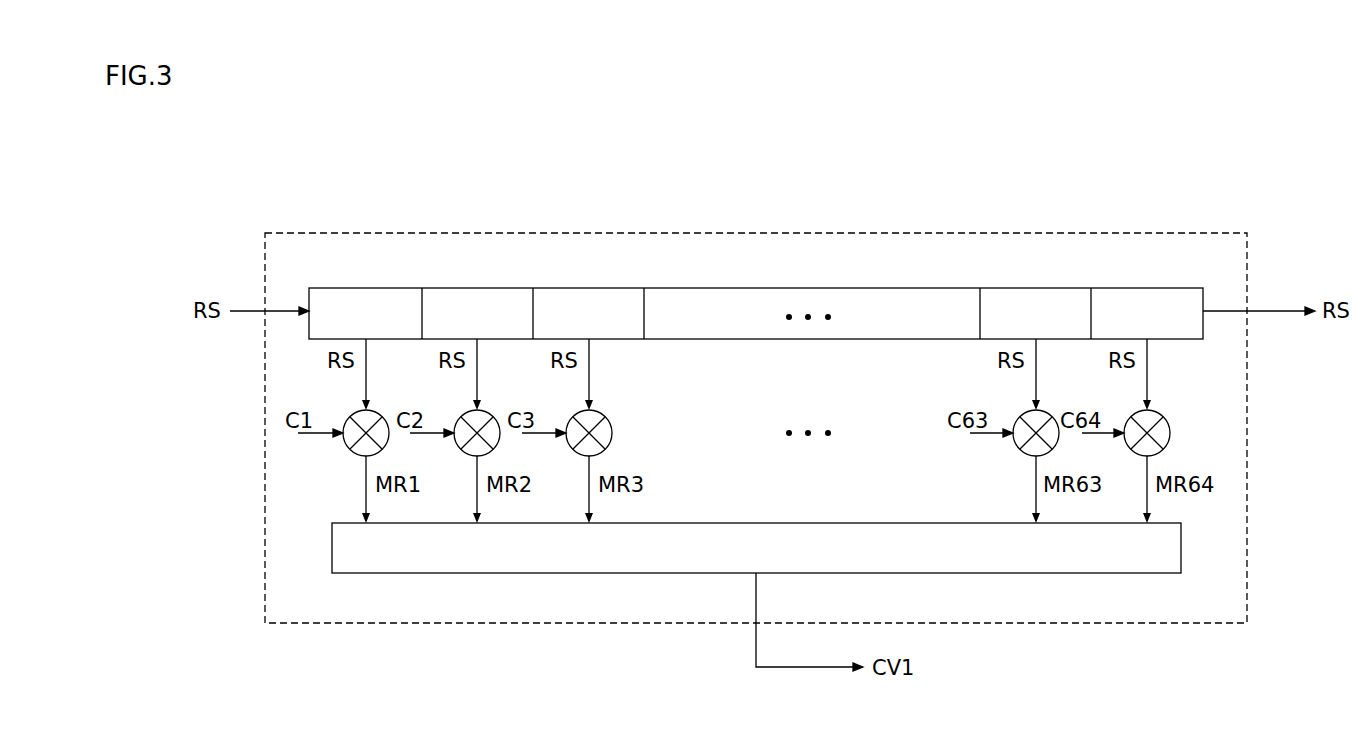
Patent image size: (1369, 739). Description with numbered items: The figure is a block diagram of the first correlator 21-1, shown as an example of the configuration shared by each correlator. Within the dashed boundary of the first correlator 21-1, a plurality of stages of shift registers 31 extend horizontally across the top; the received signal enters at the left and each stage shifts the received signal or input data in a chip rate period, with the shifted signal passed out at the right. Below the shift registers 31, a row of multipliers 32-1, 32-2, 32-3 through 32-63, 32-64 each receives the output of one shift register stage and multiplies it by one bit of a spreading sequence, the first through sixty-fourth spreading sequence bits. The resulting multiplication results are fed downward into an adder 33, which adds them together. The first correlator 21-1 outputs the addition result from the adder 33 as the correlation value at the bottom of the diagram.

The first correlator 21-1 is at (1212, 231).
The shift registers 31 is at (716, 288).
The multiplier 32-1 is at (384, 418).
The multiplier 32-2 is at (495, 418).
The multiplier 32-3 is at (607, 418).
The multiplier 32-63 is at (1054, 418).
The multiplier 32-64 is at (1165, 418).
The adder 33 is at (882, 523).